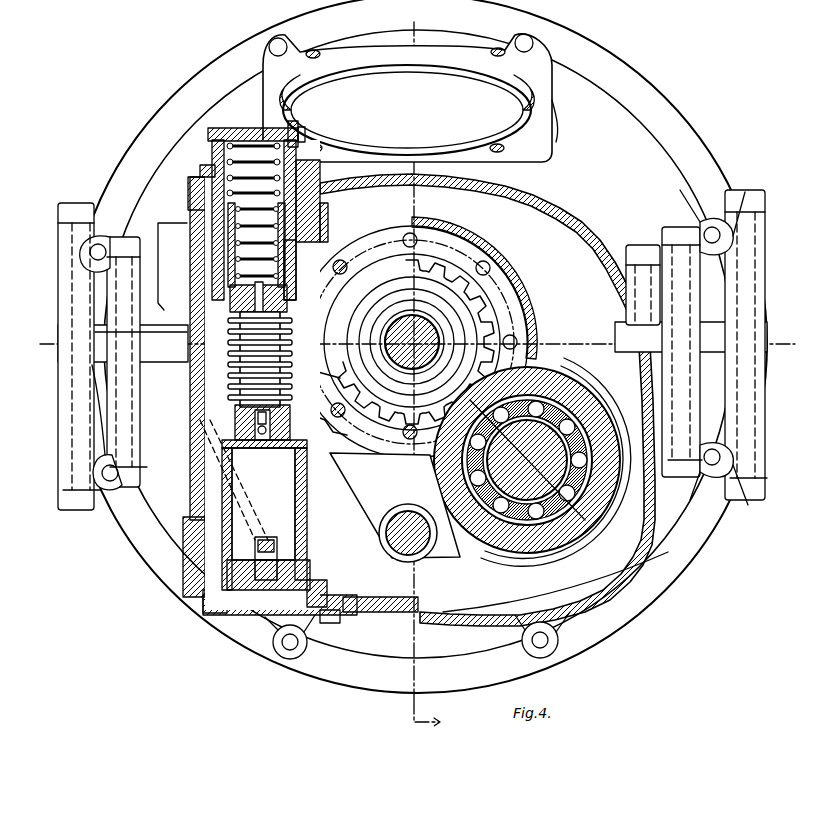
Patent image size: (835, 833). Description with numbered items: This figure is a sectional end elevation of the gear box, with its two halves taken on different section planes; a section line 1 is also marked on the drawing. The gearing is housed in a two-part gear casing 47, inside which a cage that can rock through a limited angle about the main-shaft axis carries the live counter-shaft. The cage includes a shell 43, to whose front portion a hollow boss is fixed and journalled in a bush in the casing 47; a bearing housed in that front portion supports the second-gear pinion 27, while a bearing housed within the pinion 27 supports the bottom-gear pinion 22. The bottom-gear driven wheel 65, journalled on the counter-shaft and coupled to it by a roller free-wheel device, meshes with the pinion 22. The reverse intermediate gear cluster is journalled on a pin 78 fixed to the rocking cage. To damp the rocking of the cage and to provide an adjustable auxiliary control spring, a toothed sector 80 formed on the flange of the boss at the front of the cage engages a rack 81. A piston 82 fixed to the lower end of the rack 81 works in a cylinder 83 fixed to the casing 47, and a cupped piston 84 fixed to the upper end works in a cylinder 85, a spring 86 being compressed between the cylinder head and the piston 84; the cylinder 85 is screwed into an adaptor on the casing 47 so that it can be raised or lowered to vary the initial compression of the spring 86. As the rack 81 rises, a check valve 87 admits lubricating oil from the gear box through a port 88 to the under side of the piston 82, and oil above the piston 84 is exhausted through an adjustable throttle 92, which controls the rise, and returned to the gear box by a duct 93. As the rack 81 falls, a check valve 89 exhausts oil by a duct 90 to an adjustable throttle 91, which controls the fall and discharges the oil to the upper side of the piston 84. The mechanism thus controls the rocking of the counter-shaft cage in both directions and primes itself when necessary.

The section line 1 is at (409, 612).
The bottom-gear pinion 22 is at (478, 348).
The second-gear pinion 27 is at (490, 306).
The cage shell 43 is at (450, 225).
The gear casing 47 is at (192, 383).
The bottom-gear driven wheel 65 is at (433, 464).
The pin 78 is at (402, 560).
The toothed sector 80 is at (330, 420).
The rack 81 is at (314, 414).
The piston 82 is at (263, 504).
The cylinder 83 is at (302, 500).
The cupped piston 84 is at (290, 292).
The cylinder 85 is at (215, 150).
The spring 86 is at (215, 165).
The check valve 87 is at (205, 197).
The port 88 is at (305, 576).
The check valve 89 is at (240, 425).
The duct 90 is at (240, 360).
The adjustable throttle 91 is at (232, 305).
The adjustable throttle 92 is at (302, 137).
The duct 93 is at (320, 213).